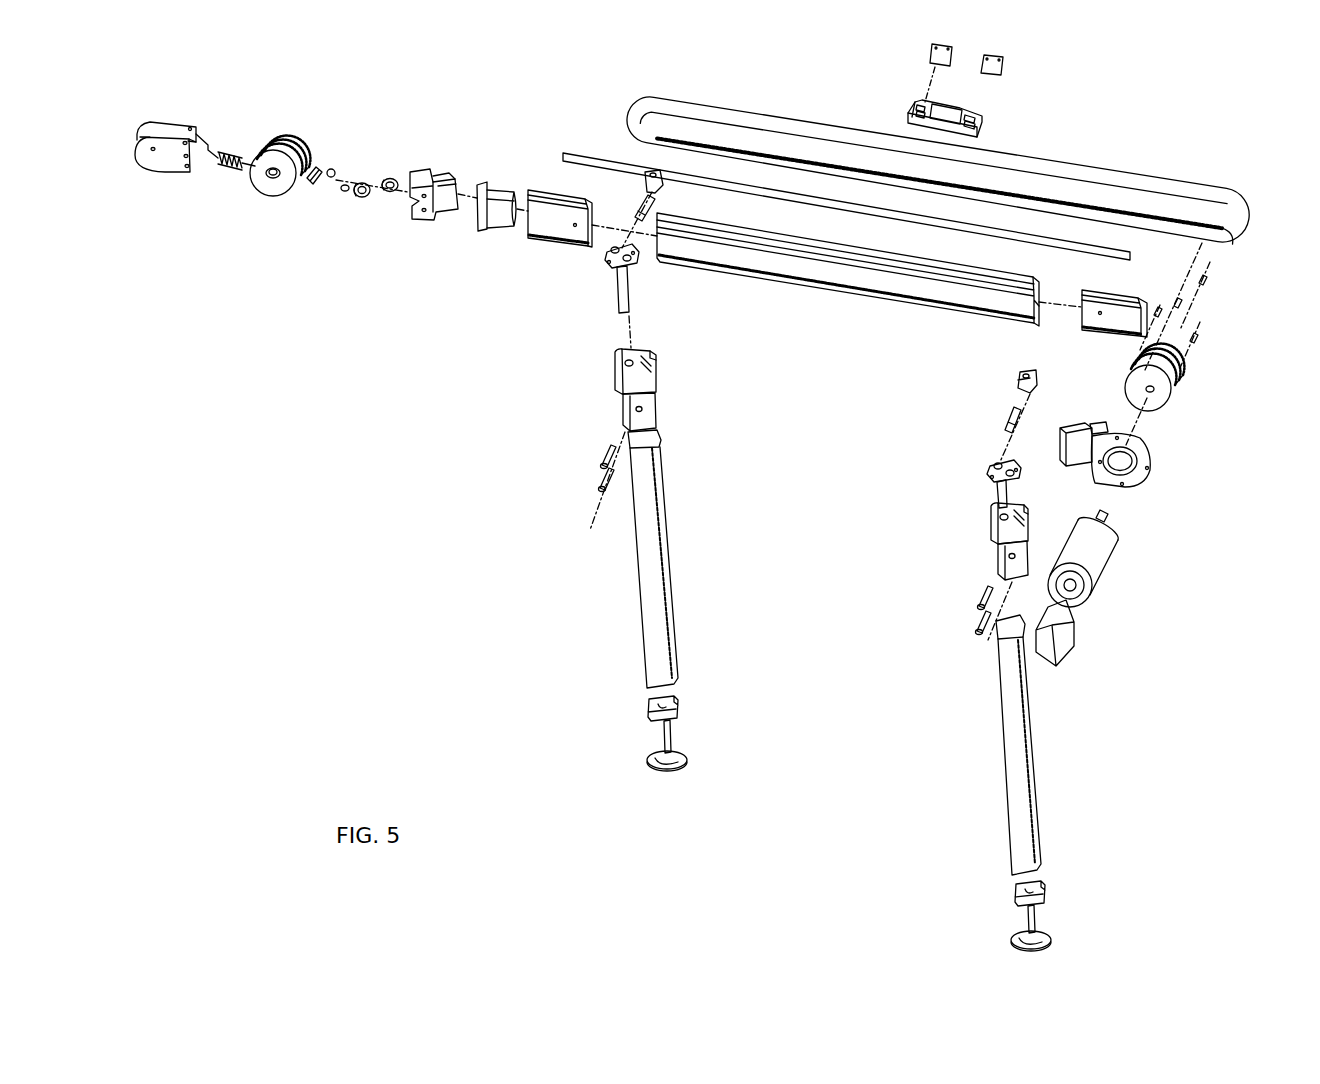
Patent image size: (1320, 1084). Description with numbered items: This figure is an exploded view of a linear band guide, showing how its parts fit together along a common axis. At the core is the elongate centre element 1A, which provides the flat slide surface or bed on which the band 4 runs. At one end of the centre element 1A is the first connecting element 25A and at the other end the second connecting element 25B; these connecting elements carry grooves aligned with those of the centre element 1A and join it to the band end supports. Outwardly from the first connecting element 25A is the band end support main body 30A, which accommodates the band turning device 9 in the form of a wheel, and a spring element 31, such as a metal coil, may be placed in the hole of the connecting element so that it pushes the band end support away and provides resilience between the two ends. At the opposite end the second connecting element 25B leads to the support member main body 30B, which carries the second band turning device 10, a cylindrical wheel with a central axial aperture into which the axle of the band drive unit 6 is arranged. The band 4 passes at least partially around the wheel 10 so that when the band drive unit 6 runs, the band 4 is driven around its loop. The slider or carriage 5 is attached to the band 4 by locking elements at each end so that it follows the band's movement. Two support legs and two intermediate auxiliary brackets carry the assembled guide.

The centre element 1A is at (815, 287).
The band 4 is at (1140, 182).
The slider or carriage 5 is at (943, 65).
The band drive unit 6 is at (1074, 630).
The band turning device 9 is at (275, 194).
The second band turning device 10 is at (1173, 402).
The first connecting element 25A is at (543, 249).
The second connecting element 25B is at (1110, 328).
The band end support main body 30A is at (419, 222).
The support member main body 30B is at (1140, 481).
The spring element 31 is at (232, 156).